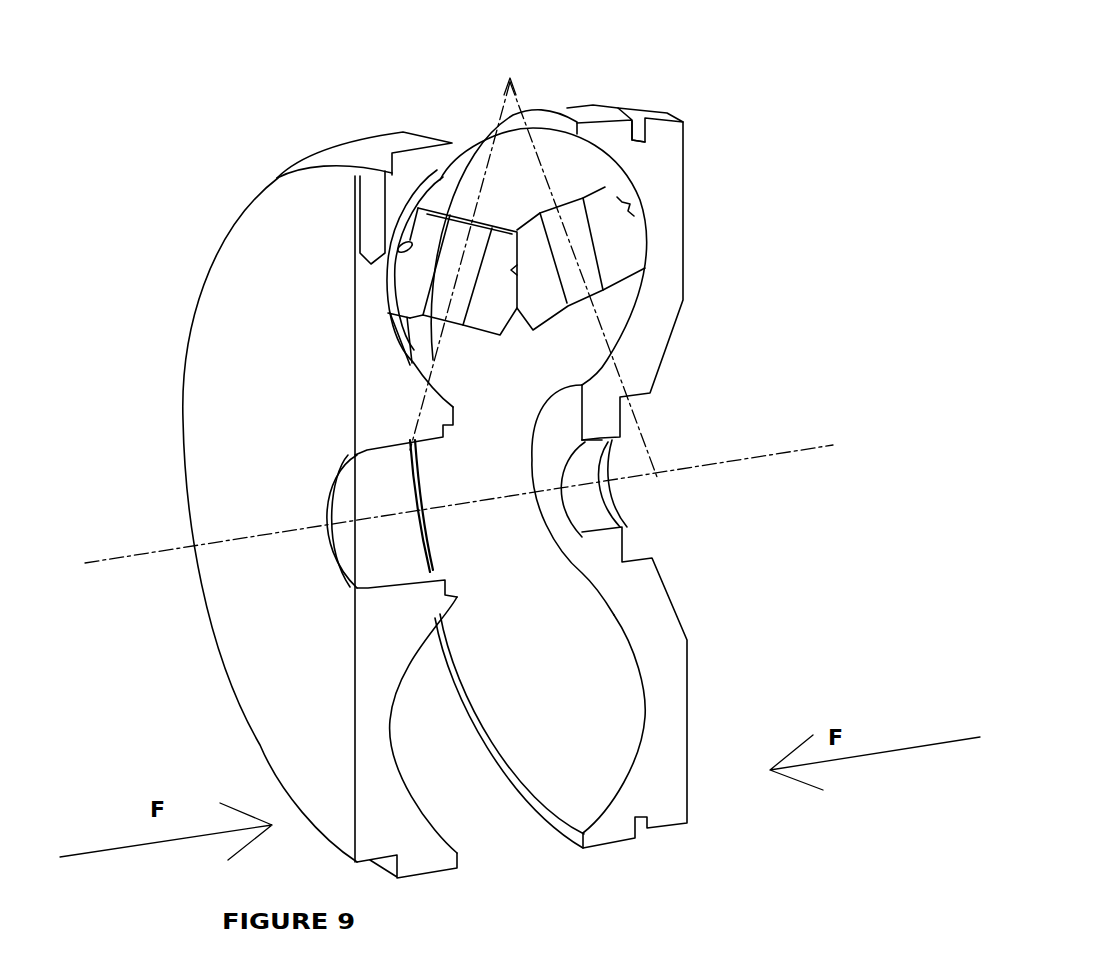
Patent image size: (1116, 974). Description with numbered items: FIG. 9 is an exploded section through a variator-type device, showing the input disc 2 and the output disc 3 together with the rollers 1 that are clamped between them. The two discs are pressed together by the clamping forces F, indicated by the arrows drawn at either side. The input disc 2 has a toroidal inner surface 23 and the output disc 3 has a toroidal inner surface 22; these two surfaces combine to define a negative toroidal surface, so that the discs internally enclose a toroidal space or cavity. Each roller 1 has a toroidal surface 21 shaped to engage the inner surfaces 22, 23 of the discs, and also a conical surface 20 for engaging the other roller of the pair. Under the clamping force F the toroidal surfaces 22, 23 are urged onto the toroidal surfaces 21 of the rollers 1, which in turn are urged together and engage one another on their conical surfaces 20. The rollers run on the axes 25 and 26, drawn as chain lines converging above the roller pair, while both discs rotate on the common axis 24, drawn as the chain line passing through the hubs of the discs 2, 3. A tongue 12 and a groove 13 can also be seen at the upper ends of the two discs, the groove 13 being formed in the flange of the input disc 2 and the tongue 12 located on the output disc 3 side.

The roller 1 is at (398, 246).
The input disc 2 is at (380, 627).
The output disc 3 is at (662, 742).
The tongue 12 is at (638, 205).
The groove 13 is at (407, 273).
The conical surface 20 is at (610, 193).
The toroidal surface 21 is at (387, 292).
The inner surface 22 is at (630, 630).
The inner surface 23 is at (392, 710).
The axis 24 is at (698, 465).
The axis 25 is at (418, 413).
The axis 26 is at (613, 375).